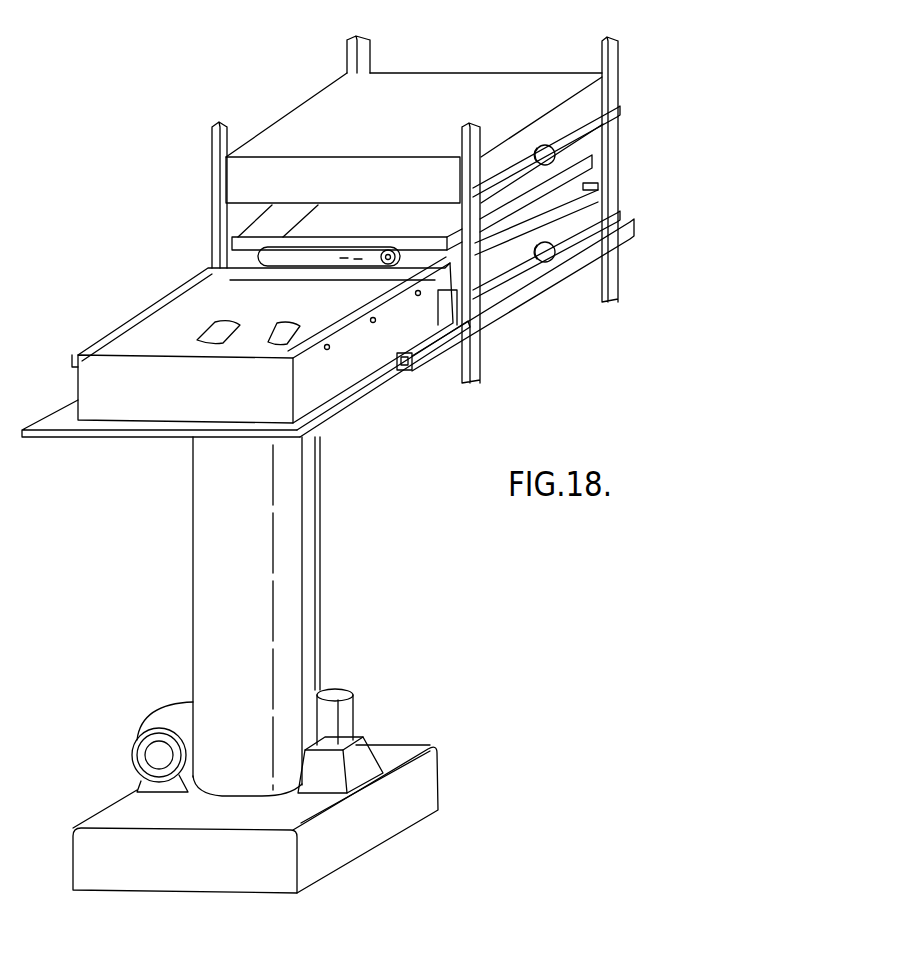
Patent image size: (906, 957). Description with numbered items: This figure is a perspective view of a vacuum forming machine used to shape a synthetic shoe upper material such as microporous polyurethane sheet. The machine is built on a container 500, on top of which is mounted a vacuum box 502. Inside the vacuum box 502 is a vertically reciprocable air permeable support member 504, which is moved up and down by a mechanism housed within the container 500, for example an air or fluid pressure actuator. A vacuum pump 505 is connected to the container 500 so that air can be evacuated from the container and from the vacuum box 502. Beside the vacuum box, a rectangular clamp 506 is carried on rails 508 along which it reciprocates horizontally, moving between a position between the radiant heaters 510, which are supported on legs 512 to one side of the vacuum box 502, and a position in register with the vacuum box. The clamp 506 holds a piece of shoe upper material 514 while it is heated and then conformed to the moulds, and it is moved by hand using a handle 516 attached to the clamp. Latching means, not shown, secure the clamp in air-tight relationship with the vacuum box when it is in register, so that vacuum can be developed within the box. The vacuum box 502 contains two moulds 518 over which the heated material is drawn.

The container 500 is at (200, 572).
The vacuum box 502 is at (145, 410).
The air permeable support member 504 is at (220, 315).
The vacuum pump 505 is at (170, 717).
The rectangular clamp 506 is at (583, 188).
The rails 508 is at (508, 247).
The radiant heaters 510 is at (498, 88).
The legs 512 is at (212, 135).
The shoe upper material 514 is at (372, 229).
The handle 516 is at (290, 263).
The moulds 518 is at (207, 333).